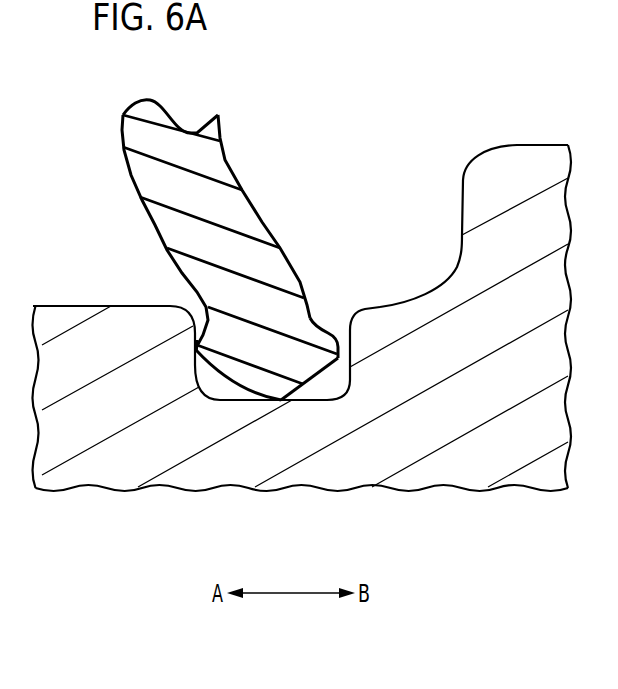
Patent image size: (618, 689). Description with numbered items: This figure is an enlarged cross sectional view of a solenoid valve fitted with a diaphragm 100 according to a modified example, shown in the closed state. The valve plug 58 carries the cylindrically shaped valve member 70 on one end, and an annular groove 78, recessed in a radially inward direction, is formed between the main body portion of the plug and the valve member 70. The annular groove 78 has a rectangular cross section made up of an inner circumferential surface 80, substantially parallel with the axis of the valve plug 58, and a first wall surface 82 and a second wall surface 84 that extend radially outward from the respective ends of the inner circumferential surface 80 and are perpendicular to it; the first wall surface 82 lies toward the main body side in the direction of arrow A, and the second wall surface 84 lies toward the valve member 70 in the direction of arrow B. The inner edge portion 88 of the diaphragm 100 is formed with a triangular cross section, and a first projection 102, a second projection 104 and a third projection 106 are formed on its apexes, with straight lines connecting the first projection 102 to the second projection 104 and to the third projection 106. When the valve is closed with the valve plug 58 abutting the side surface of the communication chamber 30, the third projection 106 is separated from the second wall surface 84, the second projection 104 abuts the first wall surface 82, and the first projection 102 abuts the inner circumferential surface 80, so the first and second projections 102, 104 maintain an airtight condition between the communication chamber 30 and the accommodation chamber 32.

The communication chamber 30 is at (412, 272).
The accommodation chamber 32 is at (117, 283).
The valve plug 58 is at (72, 305).
The valve member 70 is at (538, 157).
The annular groove 78 is at (221, 390).
The inner circumferential surface 80 is at (317, 400).
The first wall surface 82 is at (205, 353).
The second wall surface 84 is at (332, 360).
The inner edge portion 88 is at (285, 270).
The diaphragm 100 is at (239, 154).
The first projection 102 is at (264, 392).
The second projection 104 is at (196, 363).
The third projection 106 is at (339, 342).